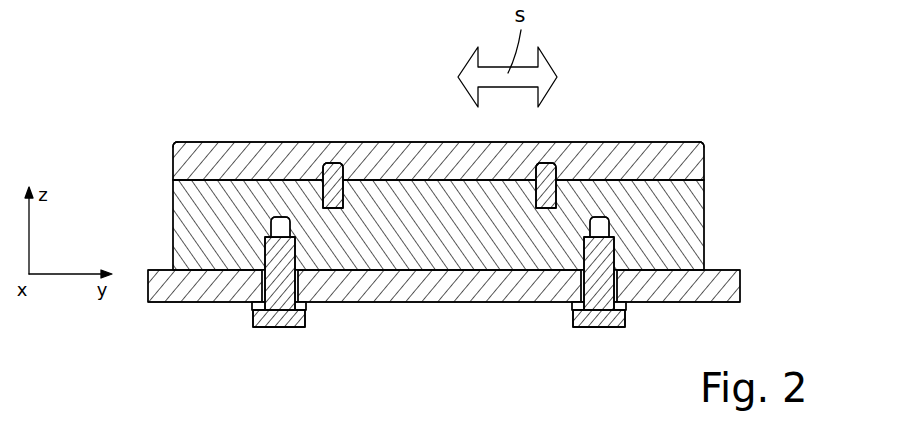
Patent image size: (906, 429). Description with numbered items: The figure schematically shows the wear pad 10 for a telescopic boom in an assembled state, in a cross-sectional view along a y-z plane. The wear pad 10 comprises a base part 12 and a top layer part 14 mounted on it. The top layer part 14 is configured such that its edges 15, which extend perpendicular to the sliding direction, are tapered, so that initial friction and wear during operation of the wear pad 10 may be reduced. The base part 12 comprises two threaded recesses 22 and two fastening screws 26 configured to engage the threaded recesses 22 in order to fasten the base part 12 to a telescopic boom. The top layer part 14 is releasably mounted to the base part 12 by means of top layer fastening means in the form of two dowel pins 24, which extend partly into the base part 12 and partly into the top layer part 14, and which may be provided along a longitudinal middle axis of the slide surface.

The wear pad 10 is at (228, 117).
The base part 12 is at (421, 252).
The top layer part 14 is at (273, 157).
The edges 15 is at (184, 143).
The threaded recess 22 is at (271, 227).
The dowel pins 24 is at (336, 162).
The fastening screw 26 is at (285, 326).